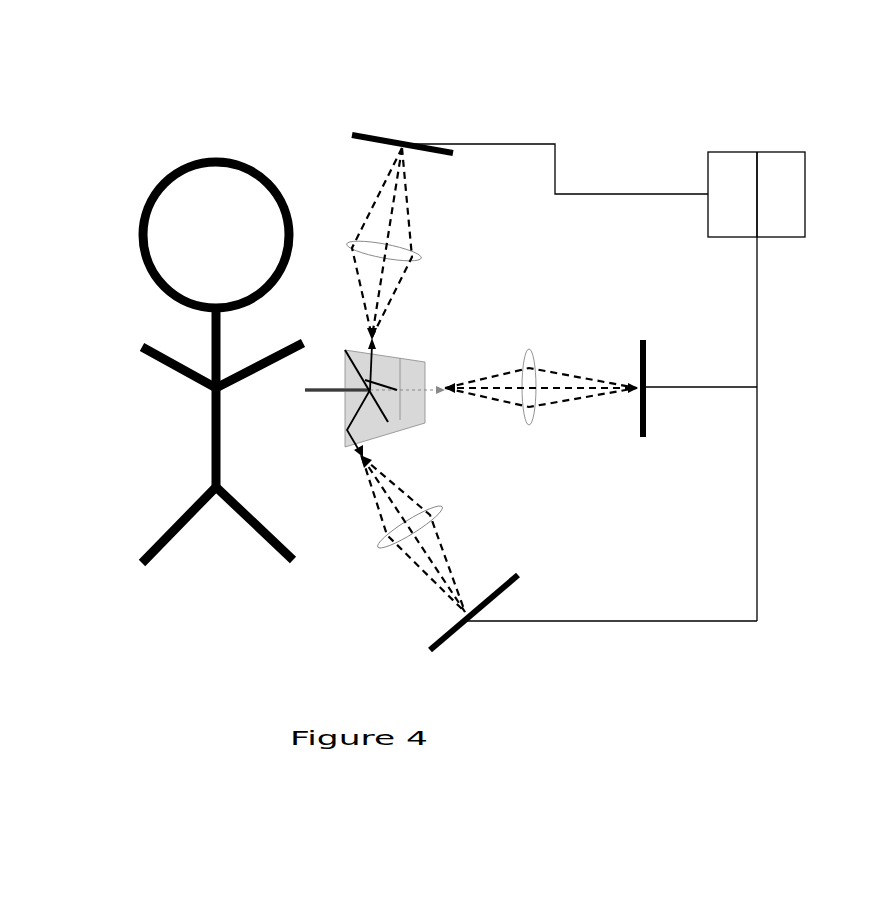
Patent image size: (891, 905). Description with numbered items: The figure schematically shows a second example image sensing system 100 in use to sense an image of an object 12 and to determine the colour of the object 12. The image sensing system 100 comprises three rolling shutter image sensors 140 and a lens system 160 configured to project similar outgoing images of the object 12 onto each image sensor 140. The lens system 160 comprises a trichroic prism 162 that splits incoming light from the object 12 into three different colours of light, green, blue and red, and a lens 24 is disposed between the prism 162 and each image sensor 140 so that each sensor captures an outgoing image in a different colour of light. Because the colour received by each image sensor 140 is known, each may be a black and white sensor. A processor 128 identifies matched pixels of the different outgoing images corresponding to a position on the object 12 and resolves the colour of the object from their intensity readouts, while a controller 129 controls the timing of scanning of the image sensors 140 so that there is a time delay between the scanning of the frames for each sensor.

The image sensing system 100 is at (207, 35).
The object 12 is at (272, 178).
The lens 24 is at (408, 250).
The processor 128 is at (805, 195).
The controller 129 is at (725, 160).
The rolling shutter image sensor 140 is at (383, 140).
The lens system 160 is at (438, 316).
The trichroic prism 162 is at (410, 367).